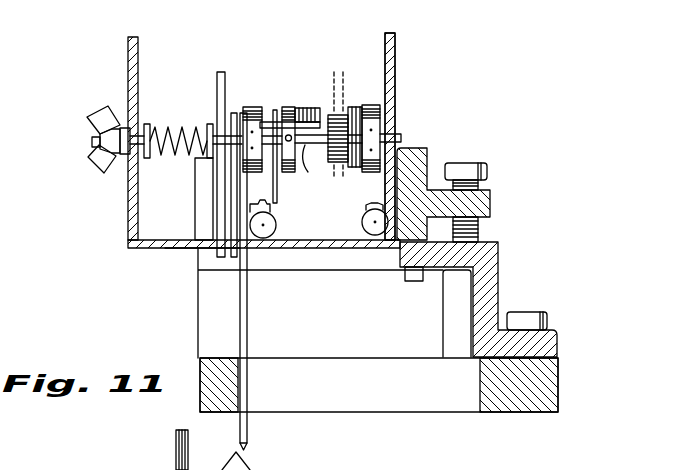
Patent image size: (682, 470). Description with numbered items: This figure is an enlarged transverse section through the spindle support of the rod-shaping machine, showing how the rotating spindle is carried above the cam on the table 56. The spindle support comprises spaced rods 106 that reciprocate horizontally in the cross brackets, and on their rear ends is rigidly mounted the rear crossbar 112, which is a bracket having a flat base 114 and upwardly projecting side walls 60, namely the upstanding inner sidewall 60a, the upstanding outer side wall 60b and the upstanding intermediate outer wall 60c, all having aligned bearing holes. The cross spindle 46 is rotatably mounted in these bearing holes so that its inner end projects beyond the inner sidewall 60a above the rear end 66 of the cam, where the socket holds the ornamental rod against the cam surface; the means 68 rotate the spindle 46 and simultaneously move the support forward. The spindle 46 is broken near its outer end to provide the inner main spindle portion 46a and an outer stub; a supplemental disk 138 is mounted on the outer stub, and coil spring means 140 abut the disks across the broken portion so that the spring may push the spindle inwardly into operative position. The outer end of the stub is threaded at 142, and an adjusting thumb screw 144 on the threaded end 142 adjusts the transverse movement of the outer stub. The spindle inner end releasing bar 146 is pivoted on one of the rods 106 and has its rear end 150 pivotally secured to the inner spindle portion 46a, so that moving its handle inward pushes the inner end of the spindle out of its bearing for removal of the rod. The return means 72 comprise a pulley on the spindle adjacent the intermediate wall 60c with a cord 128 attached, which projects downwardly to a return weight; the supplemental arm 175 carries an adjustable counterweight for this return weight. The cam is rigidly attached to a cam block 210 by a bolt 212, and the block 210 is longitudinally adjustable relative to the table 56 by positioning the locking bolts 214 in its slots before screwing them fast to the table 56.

The spindle 46 is at (398, 134).
The inner main spindle portion 46a is at (323, 197).
The table 56 is at (560, 383).
The side walls 60 is at (396, 53).
The upstanding inner sidewall 60a is at (393, 34).
The upstanding outer side wall 60b is at (126, 51).
The upstanding intermediate outer wall 60c is at (224, 72).
The rear end of cam 66 is at (421, 152).
The means to rotate spindle 68 is at (347, 72).
The return means 72 is at (248, 332).
The spaced rods 106 is at (367, 225).
The rear crossbar 112 is at (137, 248).
The flat base 114 is at (174, 249).
The cord 128 is at (250, 435).
The supplemental disk 138 is at (149, 118).
The coil spring means 140 is at (197, 130).
The threaded end 142 is at (92, 142).
The adjusting thumb screw 144 is at (98, 118).
The spindle inner end releasing bar 146 is at (272, 116).
The rear end of releasing bar 150 is at (307, 109).
The supplemental arm 175 is at (188, 462).
The cam block 210 is at (497, 283).
The bolt 212 is at (478, 172).
The locking bolts 214 is at (547, 321).